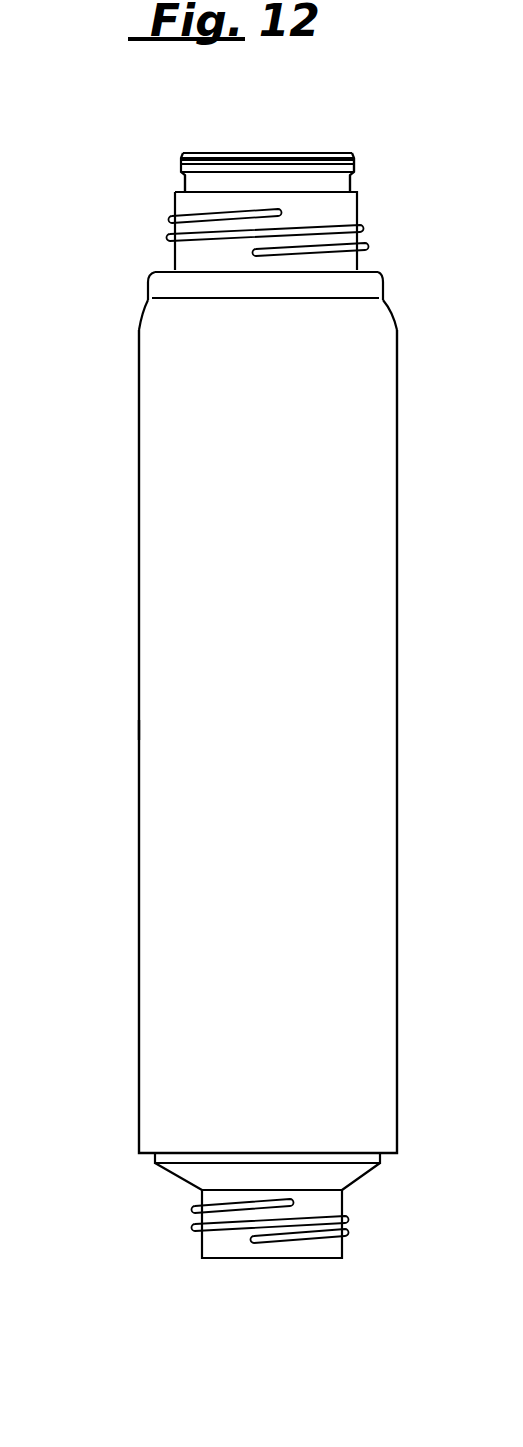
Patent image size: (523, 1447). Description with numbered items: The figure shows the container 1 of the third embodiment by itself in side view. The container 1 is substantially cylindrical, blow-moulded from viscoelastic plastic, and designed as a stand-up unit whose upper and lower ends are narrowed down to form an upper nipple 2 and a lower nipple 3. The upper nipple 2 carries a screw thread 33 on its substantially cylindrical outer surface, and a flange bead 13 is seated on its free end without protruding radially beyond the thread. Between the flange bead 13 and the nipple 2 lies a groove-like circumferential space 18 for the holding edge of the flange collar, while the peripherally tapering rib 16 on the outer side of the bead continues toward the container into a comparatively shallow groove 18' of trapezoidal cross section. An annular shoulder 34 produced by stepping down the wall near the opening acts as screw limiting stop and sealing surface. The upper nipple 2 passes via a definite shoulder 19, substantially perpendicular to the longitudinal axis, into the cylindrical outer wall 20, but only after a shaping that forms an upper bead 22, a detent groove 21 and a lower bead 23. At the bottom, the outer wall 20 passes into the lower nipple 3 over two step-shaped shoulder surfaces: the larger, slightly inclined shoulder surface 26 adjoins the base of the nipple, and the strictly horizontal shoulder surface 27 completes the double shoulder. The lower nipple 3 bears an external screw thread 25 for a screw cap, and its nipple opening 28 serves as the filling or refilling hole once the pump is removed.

The container 1 is at (139, 723).
The upper nipple 2 is at (173, 248).
The lower nipple 3 is at (200, 1197).
The flange bead 13 is at (295, 152).
The rib 16 is at (182, 157).
The groove-like circumferential space 18 is at (200, 167).
The shallow groove 18' is at (227, 124).
The shoulder 19 is at (158, 272).
The outer wall 20 is at (397, 607).
The detent groove 21 is at (383, 295).
The upper bead 22 is at (383, 275).
The lower bead 23 is at (393, 328).
The external screw thread 25 is at (225, 1230).
The larger shoulder surface 26 is at (357, 1183).
The shoulder surface 27 is at (388, 1160).
The nipple opening 28 is at (233, 1242).
The screw thread 33 is at (365, 227).
The annular shoulder 34 is at (361, 192).